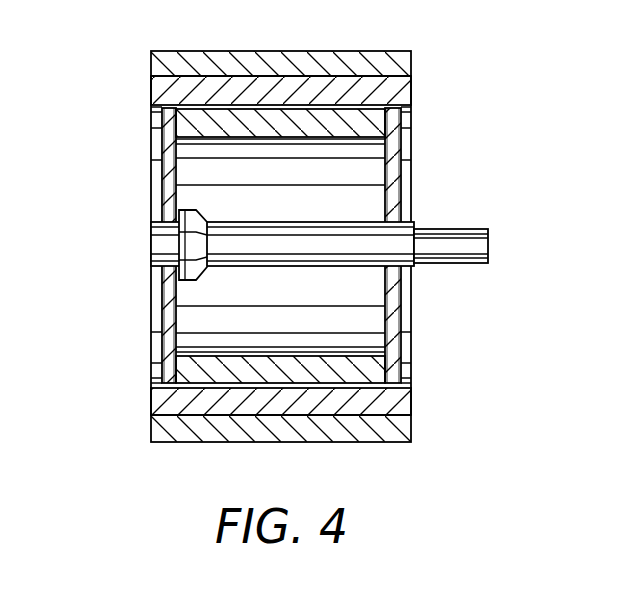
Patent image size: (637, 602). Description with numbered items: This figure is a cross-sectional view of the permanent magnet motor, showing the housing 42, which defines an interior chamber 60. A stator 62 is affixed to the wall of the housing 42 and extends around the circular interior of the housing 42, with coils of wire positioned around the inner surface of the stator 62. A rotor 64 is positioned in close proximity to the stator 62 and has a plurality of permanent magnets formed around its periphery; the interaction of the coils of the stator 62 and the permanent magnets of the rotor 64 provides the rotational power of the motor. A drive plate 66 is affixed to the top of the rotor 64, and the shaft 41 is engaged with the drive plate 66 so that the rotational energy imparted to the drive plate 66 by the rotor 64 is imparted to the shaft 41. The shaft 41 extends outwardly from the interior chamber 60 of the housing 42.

The housing 42 is at (404, 56).
The stator 62 is at (397, 91).
The drive plate 66 is at (168, 173).
The interior chamber 60 is at (190, 322).
The rotor 64 is at (193, 366).
The shaft 41 is at (372, 250).